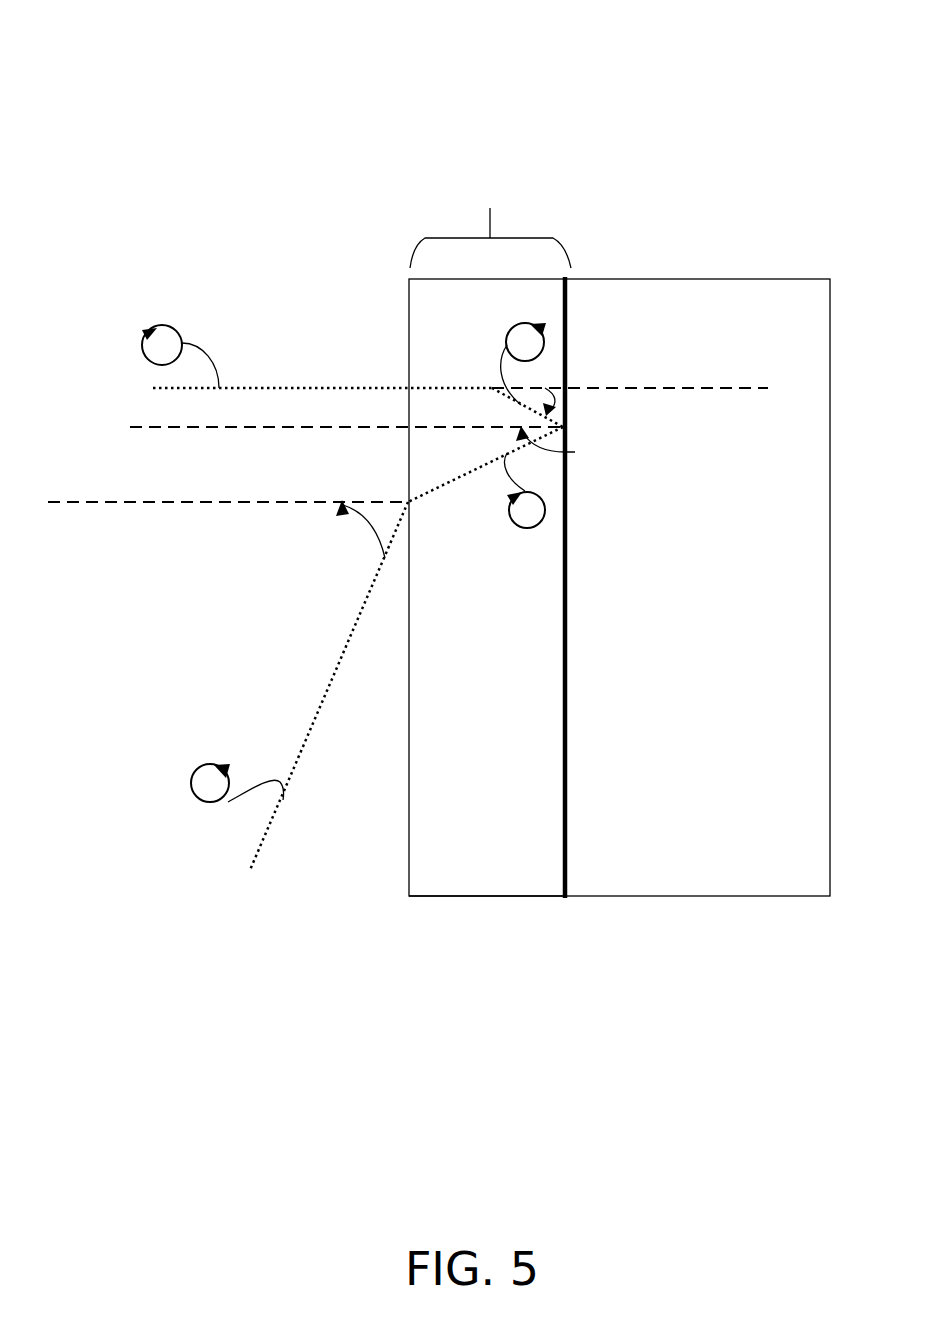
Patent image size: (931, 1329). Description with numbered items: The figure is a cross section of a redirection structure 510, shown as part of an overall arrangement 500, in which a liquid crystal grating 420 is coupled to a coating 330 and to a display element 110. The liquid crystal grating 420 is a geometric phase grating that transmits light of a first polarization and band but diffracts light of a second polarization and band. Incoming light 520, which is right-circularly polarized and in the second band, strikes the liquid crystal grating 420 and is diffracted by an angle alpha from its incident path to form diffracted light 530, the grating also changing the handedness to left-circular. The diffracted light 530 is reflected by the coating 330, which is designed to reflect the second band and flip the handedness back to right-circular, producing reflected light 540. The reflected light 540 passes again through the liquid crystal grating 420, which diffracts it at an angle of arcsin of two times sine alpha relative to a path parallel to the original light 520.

The optical system diagram 500 is at (38, 21).
The display element 110 is at (619, 587).
The liquid crystal grating 420 is at (487, 897).
The coating 330 is at (567, 822).
The redirection structure 510 is at (486, 184).
The light 520 is at (366, 388).
The diffracted light 530 is at (521, 406).
The reflected light 540 is at (347, 645).